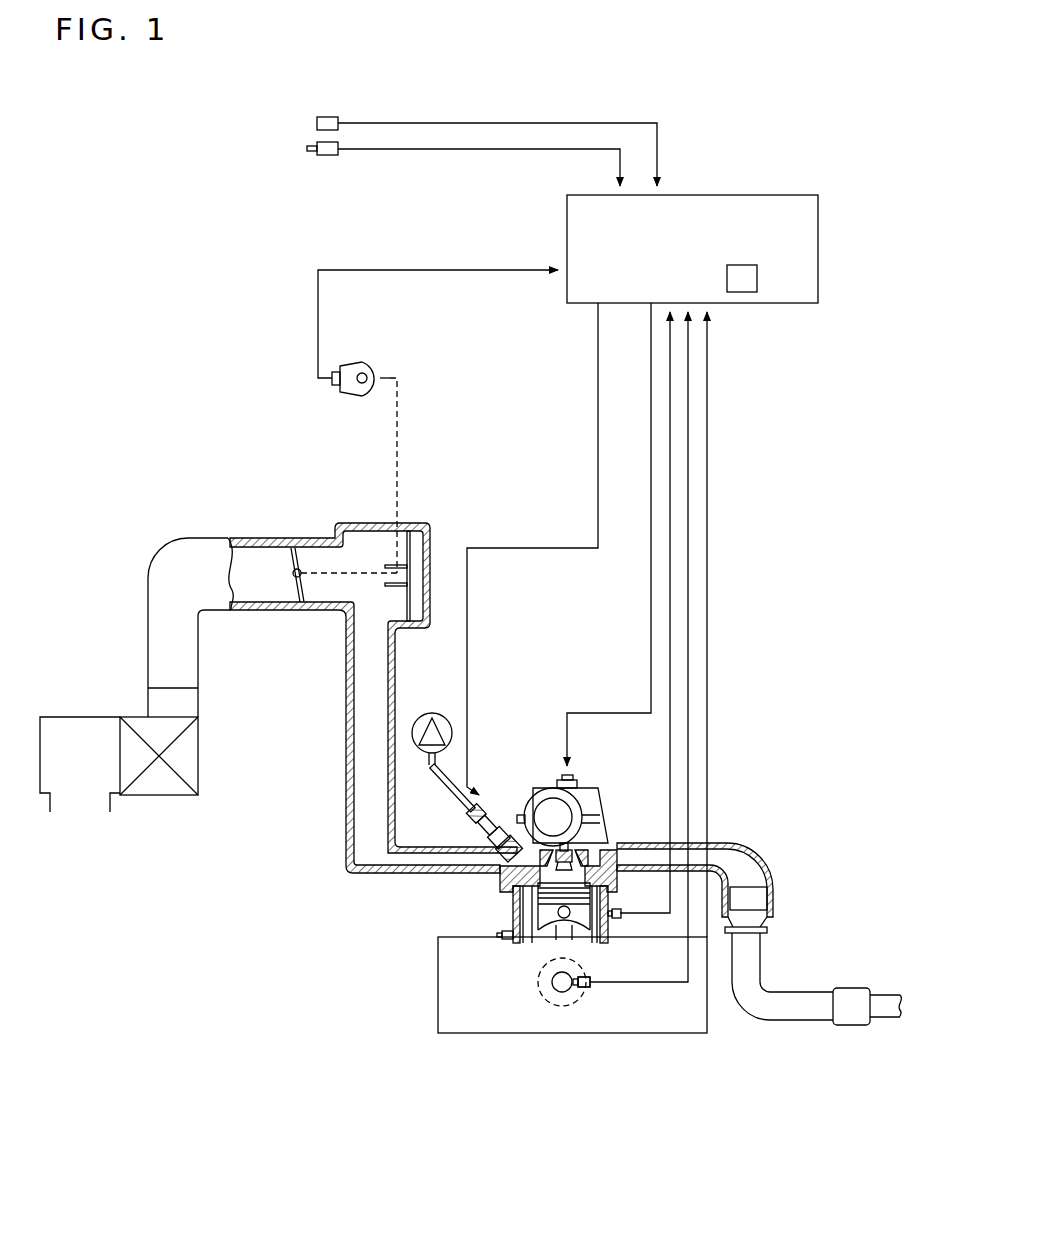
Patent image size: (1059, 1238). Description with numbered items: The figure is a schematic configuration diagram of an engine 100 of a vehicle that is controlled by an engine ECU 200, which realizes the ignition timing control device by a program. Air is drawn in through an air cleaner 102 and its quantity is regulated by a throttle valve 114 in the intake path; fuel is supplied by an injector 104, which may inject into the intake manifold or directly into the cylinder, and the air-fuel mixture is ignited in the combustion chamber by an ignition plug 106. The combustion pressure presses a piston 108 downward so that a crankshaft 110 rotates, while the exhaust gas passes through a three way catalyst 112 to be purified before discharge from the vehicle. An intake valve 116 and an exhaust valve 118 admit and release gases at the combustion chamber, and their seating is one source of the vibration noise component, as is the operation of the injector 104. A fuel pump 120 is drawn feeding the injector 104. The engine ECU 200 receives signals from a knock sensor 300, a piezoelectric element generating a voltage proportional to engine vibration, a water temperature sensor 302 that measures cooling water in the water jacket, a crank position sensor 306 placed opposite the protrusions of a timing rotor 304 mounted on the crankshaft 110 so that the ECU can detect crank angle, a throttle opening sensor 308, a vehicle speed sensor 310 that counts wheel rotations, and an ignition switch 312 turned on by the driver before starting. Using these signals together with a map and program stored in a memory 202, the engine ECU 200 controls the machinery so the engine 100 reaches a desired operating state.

The engine 100 is at (474, 899).
The air cleaner 102 is at (158, 795).
The injector 104 is at (496, 806).
The ignition plug 106 is at (577, 787).
The piston 108 is at (540, 932).
The crankshaft 110 is at (543, 1000).
The three way catalyst 112 is at (750, 887).
The throttle valve 114 is at (287, 600).
The intake valve 116 is at (535, 862).
The exhaust valve 118 is at (600, 858).
The fuel pump 120 is at (432, 713).
The engine ECU 200 is at (763, 195).
The memory 202 is at (745, 292).
The knock sensor 300 is at (497, 940).
The water temperature sensor 302 is at (608, 920).
The timing rotor 304 is at (568, 1000).
The crank position sensor 306 is at (593, 985).
The throttle opening sensor 308 is at (370, 363).
The vehicle speed sensor 310 is at (333, 117).
The ignition switch 312 is at (333, 155).